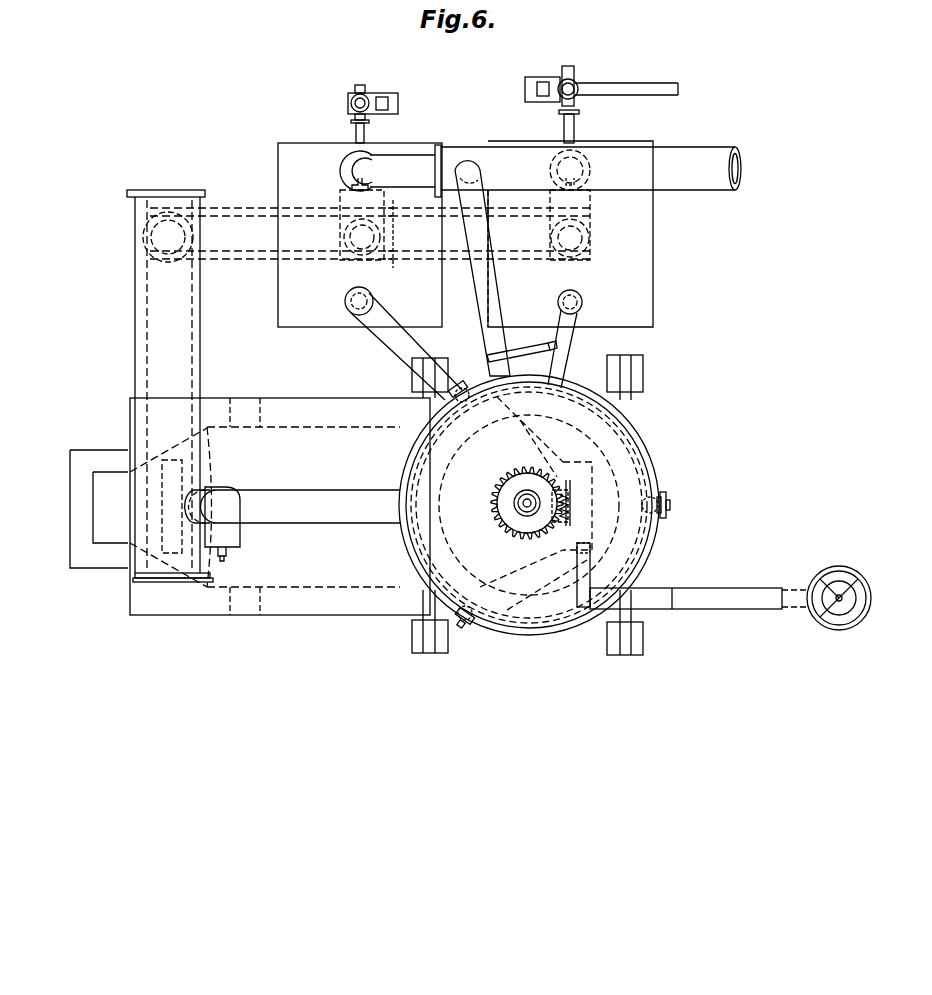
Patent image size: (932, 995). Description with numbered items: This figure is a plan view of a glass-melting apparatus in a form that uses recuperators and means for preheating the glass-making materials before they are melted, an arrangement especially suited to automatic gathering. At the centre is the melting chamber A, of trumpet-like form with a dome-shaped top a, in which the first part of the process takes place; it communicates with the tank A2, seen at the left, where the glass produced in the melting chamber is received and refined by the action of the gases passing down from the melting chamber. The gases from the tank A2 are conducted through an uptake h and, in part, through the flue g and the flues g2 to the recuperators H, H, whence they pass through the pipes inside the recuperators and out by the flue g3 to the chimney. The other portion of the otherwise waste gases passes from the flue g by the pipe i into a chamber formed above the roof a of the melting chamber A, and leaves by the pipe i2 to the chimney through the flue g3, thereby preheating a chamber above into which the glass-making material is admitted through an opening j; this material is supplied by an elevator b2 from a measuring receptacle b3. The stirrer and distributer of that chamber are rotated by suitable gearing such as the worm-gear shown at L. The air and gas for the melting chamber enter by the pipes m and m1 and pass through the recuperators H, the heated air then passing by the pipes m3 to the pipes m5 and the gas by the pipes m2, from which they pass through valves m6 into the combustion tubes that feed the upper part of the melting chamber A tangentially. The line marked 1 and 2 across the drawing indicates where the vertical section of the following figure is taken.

The gas pipe m1 is at (361, 88).
The air pipe m is at (571, 72).
The flue g3 is at (540, 171).
The flue g2 is at (233, 226).
The recuperator H is at (465, 234).
The flue g is at (157, 317).
The uptake h is at (165, 507).
The pipe i is at (292, 524).
The pipe i2 is at (480, 286).
The air pipe m3 is at (400, 352).
The gas pipe m2 is at (562, 344).
The valve m6 is at (458, 390).
The air pipe m5 is at (640, 446).
The melting chamber A is at (607, 481).
The tank A2 is at (250, 506).
The dome-shaped top a is at (515, 503).
The section line 1 is at (428, 505).
The worm-gear L is at (569, 503).
The section line 2 is at (670, 505).
The opening j is at (591, 557).
The elevator b2 is at (728, 604).
The measuring receptacle b3 is at (866, 606).